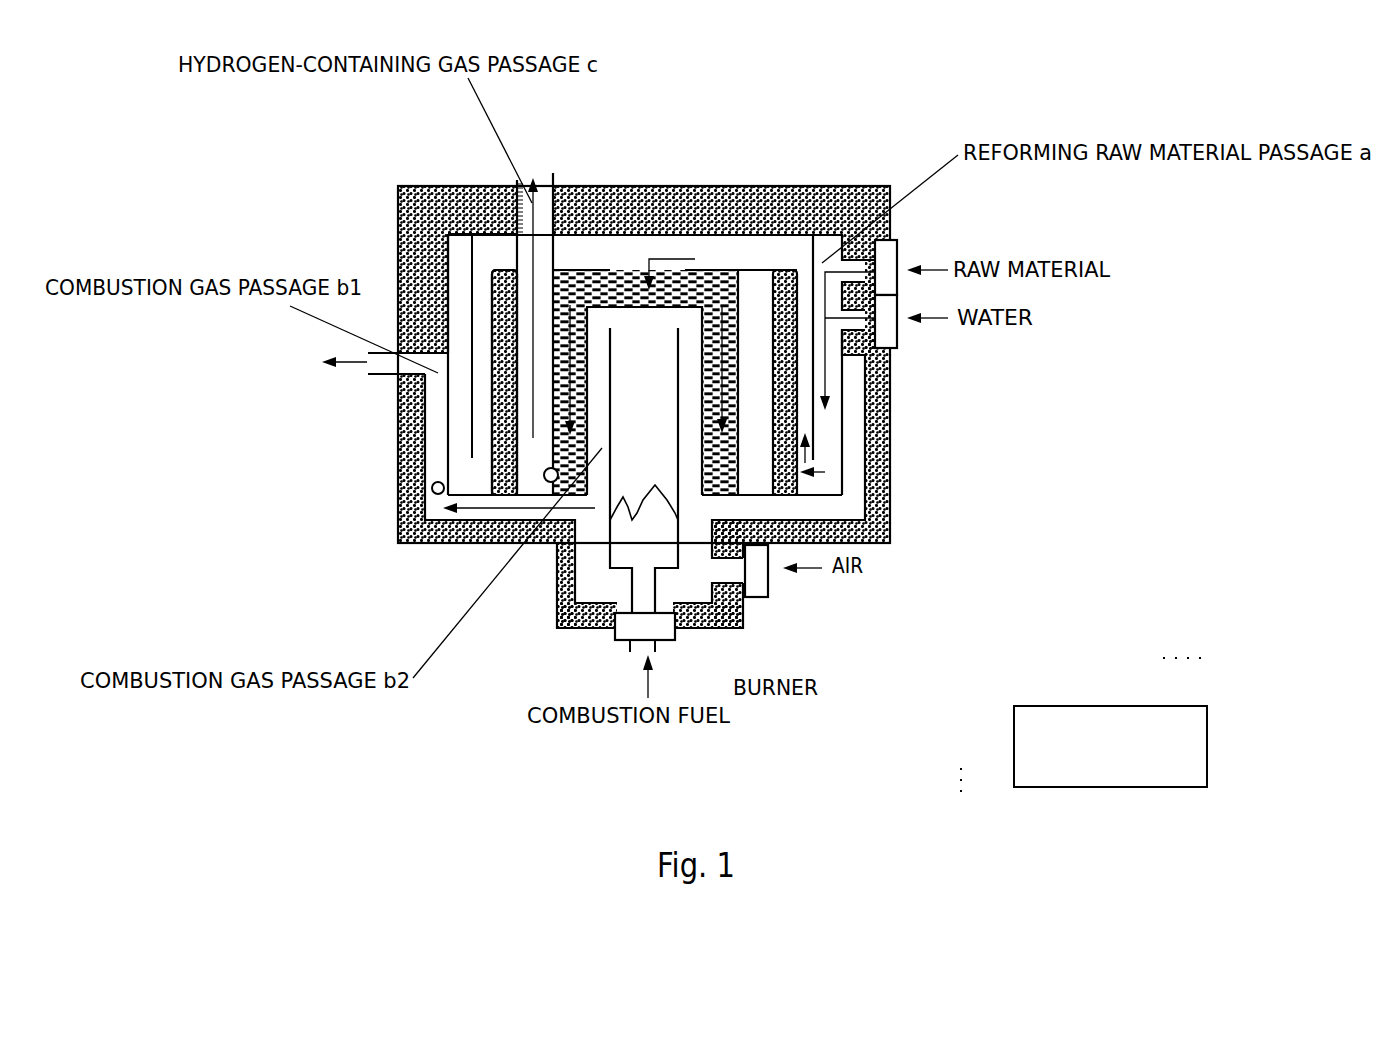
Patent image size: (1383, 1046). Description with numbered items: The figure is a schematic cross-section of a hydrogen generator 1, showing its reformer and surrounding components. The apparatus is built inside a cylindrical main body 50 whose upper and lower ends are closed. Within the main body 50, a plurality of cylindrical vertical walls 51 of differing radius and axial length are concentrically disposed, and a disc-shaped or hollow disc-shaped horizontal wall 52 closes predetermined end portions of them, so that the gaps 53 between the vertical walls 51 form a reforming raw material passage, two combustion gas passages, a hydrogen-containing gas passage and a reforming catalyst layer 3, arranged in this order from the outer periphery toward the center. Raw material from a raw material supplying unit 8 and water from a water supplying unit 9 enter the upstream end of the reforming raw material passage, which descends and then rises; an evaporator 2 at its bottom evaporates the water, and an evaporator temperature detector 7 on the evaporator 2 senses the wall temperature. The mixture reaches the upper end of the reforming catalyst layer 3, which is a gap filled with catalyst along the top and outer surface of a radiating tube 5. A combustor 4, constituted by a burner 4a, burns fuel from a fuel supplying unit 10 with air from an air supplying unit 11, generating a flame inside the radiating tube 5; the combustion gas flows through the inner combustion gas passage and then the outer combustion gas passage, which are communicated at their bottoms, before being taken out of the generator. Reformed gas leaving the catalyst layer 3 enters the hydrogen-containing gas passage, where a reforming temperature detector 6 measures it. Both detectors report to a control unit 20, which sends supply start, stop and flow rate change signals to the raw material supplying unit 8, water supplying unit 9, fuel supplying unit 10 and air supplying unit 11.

The hydrogen generator 1 is at (856, 168).
The evaporator 2 is at (827, 483).
The reforming catalyst layer 3 is at (710, 292).
The combustor 4 is at (778, 757).
The burner 4a is at (647, 547).
The radiating tube 5 is at (611, 362).
The reforming temperature detector 6 is at (546, 481).
The evaporator temperature detector 7 is at (433, 491).
The raw material supplying unit 8 is at (898, 247).
The water supplying unit 9 is at (898, 345).
The fuel supplying unit 10 is at (667, 640).
The air supplying unit 11 is at (770, 593).
The control unit 20 is at (1207, 728).
The main body 50 is at (405, 428).
The vertical walls 51 is at (475, 305).
The horizontal wall 52 is at (497, 232).
The gaps 53 is at (510, 268).